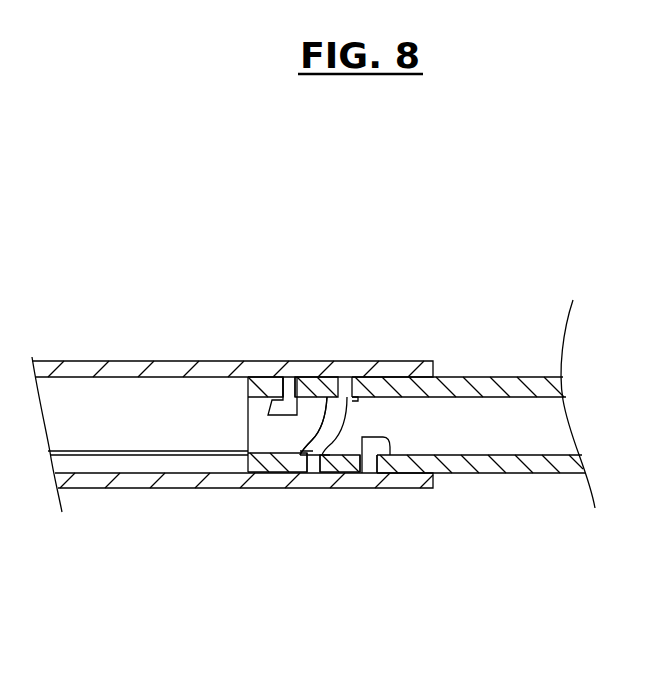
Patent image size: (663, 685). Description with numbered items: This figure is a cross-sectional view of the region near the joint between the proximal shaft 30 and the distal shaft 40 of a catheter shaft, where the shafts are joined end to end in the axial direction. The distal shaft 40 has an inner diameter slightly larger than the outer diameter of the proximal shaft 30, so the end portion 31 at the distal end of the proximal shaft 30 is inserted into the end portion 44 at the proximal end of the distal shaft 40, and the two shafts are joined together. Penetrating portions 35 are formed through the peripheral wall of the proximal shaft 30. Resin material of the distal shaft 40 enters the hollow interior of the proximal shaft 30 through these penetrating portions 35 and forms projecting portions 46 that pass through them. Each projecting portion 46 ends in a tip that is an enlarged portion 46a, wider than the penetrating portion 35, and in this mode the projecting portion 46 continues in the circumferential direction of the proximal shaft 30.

The proximal shaft 30 is at (488, 377).
The end portion of the proximal shaft 31 is at (413, 377).
The penetrating portion 35 is at (250, 458).
The distal shaft 40 is at (138, 360).
The end portion of the distal shaft 44 is at (264, 361).
The projecting portion 46 is at (288, 380).
The enlarged portion 46a is at (298, 448).